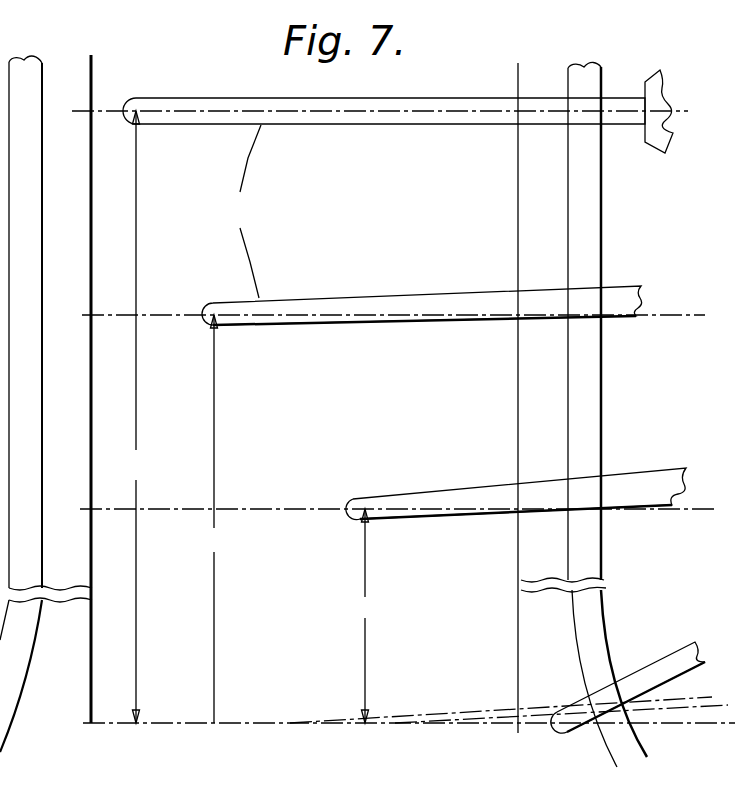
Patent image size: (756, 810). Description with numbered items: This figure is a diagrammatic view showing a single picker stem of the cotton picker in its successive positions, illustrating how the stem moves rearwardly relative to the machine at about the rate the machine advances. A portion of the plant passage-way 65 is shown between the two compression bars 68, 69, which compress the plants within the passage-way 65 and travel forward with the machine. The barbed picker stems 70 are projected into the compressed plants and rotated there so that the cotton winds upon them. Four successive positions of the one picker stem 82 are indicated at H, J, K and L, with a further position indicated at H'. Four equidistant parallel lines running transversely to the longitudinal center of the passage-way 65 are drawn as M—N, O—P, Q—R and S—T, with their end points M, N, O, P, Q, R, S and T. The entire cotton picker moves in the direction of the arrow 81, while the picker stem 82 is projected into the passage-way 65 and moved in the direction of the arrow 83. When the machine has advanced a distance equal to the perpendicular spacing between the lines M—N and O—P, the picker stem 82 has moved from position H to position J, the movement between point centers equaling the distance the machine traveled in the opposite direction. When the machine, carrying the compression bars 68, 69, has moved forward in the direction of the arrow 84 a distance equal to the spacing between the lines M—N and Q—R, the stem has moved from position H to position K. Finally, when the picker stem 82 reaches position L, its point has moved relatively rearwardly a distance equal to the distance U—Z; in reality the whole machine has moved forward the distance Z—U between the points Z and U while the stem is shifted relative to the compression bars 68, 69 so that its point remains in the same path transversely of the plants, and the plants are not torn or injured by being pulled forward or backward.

The plant passage-way 65 is at (359, 213).
The compression bar 68 is at (38, 237).
The compression bar 69 is at (590, 373).
The picker stems 70 is at (241, 211).
The arrow 81 is at (380, 670).
The picker stem 82 is at (590, 705).
The arrow 83 is at (380, 553).
The arrow 84 is at (193, 417).
The position of picker stem L is at (380, 111).
The position of picker stem K is at (393, 294).
The position of picker stem J is at (399, 489).
The position of picker stem H is at (628, 681).
The position of picker stem H' is at (523, 671).
The point of line M-N M is at (387, 726).
The point of line M- N is at (743, 730).
The point of line S-T S is at (72, 97).
The point of distance U- Z is at (141, 90).
The point of line S- T is at (695, 105).
The point of line Q-R Q is at (69, 318).
The point of line Q- R is at (709, 319).
The point of line O-P O is at (67, 511).
The point of line O- P is at (727, 512).
The point of distance U-Z U is at (135, 743).